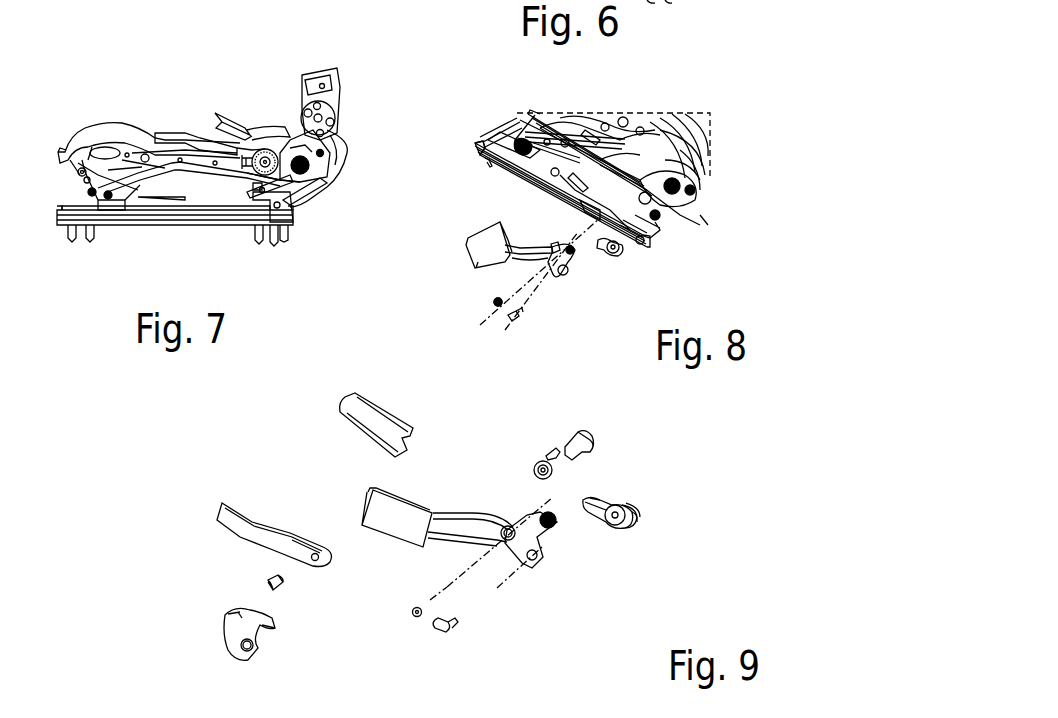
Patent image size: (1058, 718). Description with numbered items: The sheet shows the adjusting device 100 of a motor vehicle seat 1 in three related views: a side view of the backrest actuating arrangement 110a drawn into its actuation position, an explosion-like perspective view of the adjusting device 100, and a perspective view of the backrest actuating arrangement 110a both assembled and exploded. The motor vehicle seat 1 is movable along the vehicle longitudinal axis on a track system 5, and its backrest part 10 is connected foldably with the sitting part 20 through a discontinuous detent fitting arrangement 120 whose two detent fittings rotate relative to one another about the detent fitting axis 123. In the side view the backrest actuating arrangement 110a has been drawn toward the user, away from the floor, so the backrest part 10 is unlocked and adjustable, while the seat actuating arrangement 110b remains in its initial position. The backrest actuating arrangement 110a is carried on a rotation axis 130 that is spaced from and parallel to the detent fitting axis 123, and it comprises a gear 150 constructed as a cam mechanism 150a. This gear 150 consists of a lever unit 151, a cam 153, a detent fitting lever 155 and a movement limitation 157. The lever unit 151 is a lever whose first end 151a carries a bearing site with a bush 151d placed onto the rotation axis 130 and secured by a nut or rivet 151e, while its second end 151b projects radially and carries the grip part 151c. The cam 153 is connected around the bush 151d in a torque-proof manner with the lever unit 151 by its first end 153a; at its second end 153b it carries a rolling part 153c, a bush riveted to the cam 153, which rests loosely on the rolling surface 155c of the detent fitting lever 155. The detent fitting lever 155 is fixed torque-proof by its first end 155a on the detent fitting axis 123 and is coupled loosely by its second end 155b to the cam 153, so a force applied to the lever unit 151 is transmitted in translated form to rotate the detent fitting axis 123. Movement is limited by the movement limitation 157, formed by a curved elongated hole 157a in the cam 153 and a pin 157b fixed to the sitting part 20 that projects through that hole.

In FIG. 7, the motor vehicle seat 1 is at (263, 65).
In FIG. 7, the track system 5 is at (87, 228).
In FIG. 8, the track system 5 is at (480, 150).
In FIG. 7, the backrest part 10 is at (345, 75).
In FIG. 7, the sitting part 20 is at (75, 135).
In FIG. 8, the sitting part 20 is at (540, 110).
In FIG. 8, the adjusting device 100 is at (637, 258).
In FIG. 7, the backrest actuating arrangement 110a is at (250, 147).
In FIG. 7, the seat actuating arrangement 110b is at (182, 128).
In FIG. 8, the seat actuating arrangement 110b is at (525, 115).
In FIG. 7, the detent fitting arrangement 120 is at (345, 128).
In FIG. 8, the detent fitting arrangement 120 is at (700, 190).
In FIG. 7, the detent fitting axis 123 is at (342, 108).
In FIG. 8, the detent fitting axis 123 is at (637, 240).
In FIG. 7, the rotation axis 130 is at (282, 130).
In FIG. 8, the rotation axis 130 is at (690, 145).
In FIG. 9, the rotation axis 130 is at (590, 430).
In FIG. 9, the gear 150 is at (545, 600).
In FIG. 9, the cam mechanism 150a is at (438, 593).
In FIG. 7, the lever unit 151 is at (252, 120).
In FIG. 8, the lever unit 151 is at (520, 248).
In FIG. 9, the lever unit 151 is at (250, 515).
In FIG. 9, the first end 151a is at (325, 538).
In FIG. 9, the second end 151b is at (212, 495).
In FIG. 7, the grip part 151c is at (222, 102).
In FIG. 8, the grip part 151c is at (470, 235).
In FIG. 9, the grip part 151c is at (345, 420).
In FIG. 8, the bush 151d is at (553, 248).
In FIG. 9, the bush 151d is at (262, 575).
In FIG. 8, the nut or rivet 151e is at (490, 295).
In FIG. 9, the nut or rivet 151e is at (405, 608).
In FIG. 7, the cam 153 is at (284, 183).
In FIG. 8, the cam 153 is at (565, 283).
In FIG. 9, the cam 153 is at (228, 632).
In FIG. 9, the first end of the cam 153a is at (222, 616).
In FIG. 9, the second end of the cam 153b is at (280, 640).
In FIG. 9, the rolling part 153c is at (545, 450).
In FIG. 7, the detent fitting lever 155 is at (335, 142).
In FIG. 8, the detent fitting lever 155 is at (615, 265).
In FIG. 9, the detent fitting lever 155 is at (640, 530).
In FIG. 9, the first end of the detent fitting lever 155a is at (643, 497).
In FIG. 9, the second end of the detent fitting lever 155b is at (598, 500).
In FIG. 9, the rolling surface 155c is at (595, 499).
In FIG. 7, the movement limitation 157 is at (325, 178).
In FIG. 9, the movement limitation 157 is at (540, 565).
In FIG. 7, the elongated hole 157a is at (325, 188).
In FIG. 9, the elongated hole 157a is at (236, 650).
In FIG. 8, the pin 157b is at (510, 333).
In FIG. 9, the pin 157b is at (450, 630).